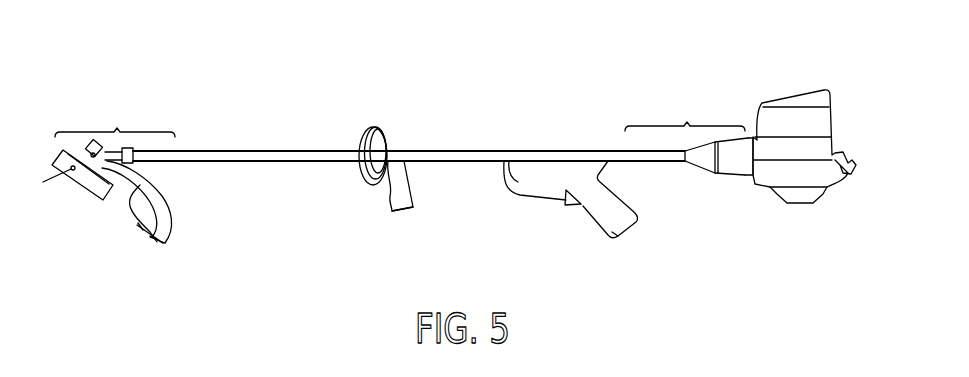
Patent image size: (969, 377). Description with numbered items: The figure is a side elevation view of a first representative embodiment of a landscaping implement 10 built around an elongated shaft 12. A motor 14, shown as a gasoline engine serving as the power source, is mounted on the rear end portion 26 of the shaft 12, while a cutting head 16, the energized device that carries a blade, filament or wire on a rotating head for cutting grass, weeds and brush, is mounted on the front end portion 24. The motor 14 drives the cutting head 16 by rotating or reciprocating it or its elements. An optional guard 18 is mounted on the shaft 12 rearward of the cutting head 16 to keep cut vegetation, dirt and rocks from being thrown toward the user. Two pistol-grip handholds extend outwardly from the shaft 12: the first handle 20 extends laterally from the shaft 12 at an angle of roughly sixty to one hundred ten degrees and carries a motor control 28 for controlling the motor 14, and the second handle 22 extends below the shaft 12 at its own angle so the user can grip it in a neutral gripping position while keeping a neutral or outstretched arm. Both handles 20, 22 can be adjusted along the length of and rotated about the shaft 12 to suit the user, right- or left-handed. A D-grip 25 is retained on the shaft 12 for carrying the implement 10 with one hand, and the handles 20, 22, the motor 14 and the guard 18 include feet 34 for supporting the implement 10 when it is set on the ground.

The implement 10 is at (584, 71).
The shaft 12 is at (290, 154).
The motor 14 is at (803, 97).
The cutting head 16 is at (62, 153).
The guard 18 is at (130, 215).
The first handle 20 is at (600, 197).
The second handle 22 is at (402, 186).
The front end portion 24 is at (115, 120).
The D-grip 25 is at (372, 127).
The rear end portion 26 is at (685, 114).
The motor control 28 is at (571, 201).
The feet 34 is at (148, 237).